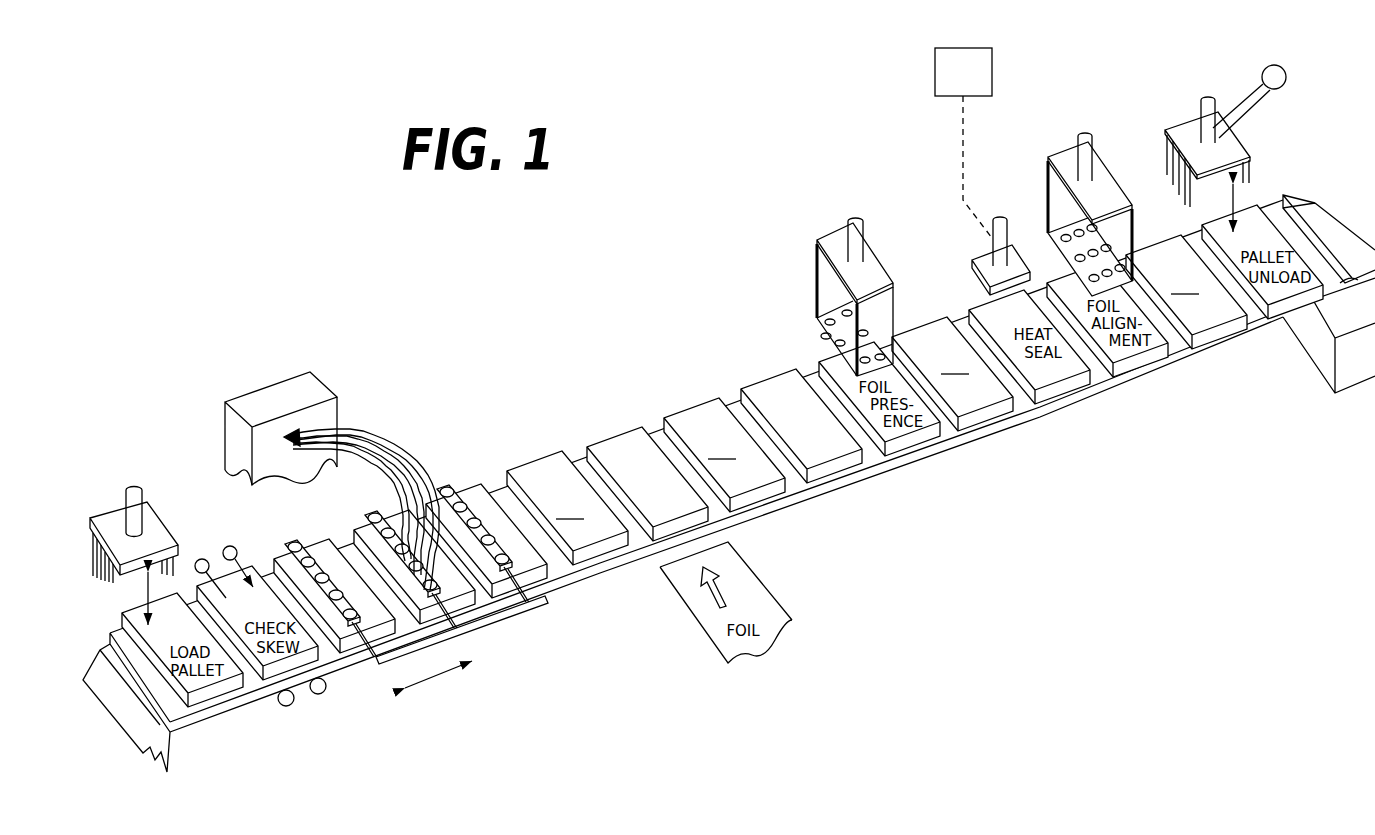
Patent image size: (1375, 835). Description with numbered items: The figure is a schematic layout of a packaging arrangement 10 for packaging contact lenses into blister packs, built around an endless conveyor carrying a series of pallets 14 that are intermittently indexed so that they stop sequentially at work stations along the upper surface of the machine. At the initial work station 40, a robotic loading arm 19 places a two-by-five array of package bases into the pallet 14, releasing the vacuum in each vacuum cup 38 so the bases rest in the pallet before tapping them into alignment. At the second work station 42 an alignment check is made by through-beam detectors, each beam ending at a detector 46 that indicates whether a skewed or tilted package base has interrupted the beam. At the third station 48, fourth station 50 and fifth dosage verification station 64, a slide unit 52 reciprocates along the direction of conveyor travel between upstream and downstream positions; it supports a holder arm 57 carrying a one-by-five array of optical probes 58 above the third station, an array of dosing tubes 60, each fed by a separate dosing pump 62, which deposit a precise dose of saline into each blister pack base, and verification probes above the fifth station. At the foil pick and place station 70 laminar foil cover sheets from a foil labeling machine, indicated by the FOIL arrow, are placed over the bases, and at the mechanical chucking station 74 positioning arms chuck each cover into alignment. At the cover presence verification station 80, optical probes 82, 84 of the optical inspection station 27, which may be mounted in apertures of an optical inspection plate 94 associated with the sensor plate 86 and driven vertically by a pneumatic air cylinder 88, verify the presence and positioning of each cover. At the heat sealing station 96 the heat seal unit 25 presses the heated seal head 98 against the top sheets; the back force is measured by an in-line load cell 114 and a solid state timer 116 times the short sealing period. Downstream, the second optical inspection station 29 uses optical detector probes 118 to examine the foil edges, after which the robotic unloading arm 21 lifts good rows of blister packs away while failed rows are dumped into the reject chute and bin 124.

The packaging arrangement 10 is at (412, 297).
The pallet 14 is at (877, 400).
The robotic loading arm 19 is at (123, 541).
The robotic unloading arm 21 is at (1291, 105).
The heat seal unit 25 is at (965, 252).
The optical inspection station 27 is at (830, 276).
The second optical inspection station 29 is at (1092, 190).
The vacuum cup 38 is at (178, 570).
The initial work station 40 is at (224, 716).
The second work station 42 is at (314, 708).
The detector 46 is at (283, 706).
The third station 48 is at (438, 700).
The fourth station 50 is at (481, 642).
The slide unit 52 is at (538, 622).
The holder arm 57 is at (372, 660).
The optical probes 58 is at (324, 572).
The dosing tubes 60 is at (426, 466).
The dosing pump 62 is at (305, 385).
The fifth dosage verification station 64 is at (541, 617).
The foil pick and place station 70 is at (618, 426).
The mechanical chucking station 74 is at (742, 379).
The cover presence verification station 80 is at (916, 459).
The optical probe 82 is at (828, 312).
The optical probe 84 is at (892, 306).
The sensor plate 86 is at (784, 323).
The optical inspection plate 94 is at (823, 335).
The pneumatic air cylinder 88 is at (868, 222).
The heat sealing station 96 is at (1076, 403).
The heated seal head 98 is at (975, 278).
The in-line load cell 114 is at (230, 546).
The solid state timer 116 is at (992, 62).
The optical detector probes 118 is at (1086, 268).
The reject chute and bin 124 is at (1361, 370).